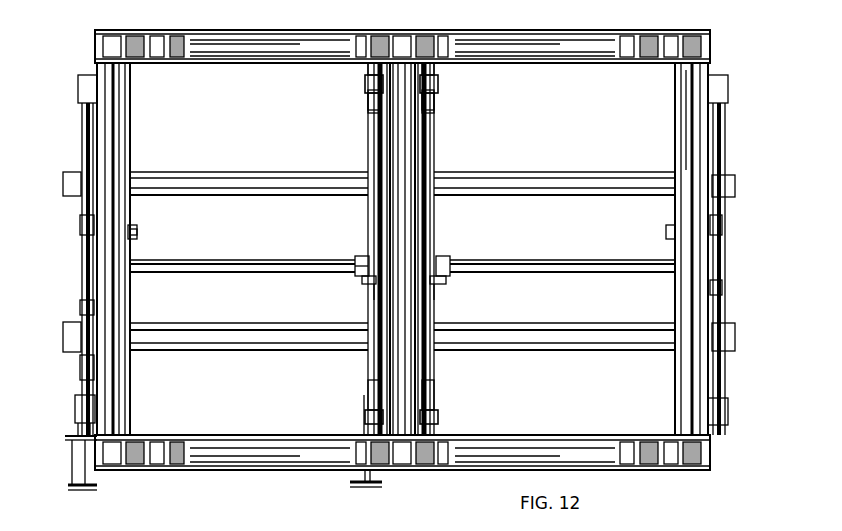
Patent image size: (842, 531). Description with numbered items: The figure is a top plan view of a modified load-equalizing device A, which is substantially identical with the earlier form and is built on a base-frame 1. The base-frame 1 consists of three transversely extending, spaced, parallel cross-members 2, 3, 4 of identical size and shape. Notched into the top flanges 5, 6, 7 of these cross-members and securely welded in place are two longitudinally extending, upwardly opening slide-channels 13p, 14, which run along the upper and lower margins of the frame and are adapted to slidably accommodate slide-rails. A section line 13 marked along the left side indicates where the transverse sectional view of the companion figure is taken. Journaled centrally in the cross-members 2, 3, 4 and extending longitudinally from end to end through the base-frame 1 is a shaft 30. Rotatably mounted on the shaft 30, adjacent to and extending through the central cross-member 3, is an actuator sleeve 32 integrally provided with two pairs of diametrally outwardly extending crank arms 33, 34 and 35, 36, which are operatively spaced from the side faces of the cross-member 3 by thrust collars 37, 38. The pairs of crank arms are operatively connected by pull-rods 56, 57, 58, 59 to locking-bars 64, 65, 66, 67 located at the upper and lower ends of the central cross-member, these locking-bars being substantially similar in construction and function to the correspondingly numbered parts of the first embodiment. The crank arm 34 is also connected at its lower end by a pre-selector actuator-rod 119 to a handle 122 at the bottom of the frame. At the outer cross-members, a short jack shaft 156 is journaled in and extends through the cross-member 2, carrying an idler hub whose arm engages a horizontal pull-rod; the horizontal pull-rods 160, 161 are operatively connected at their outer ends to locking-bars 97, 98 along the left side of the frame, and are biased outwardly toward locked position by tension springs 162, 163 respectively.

The base-frame 1 is at (715, 52).
The cross-member 2 is at (131, 249).
The cross-member 3 is at (430, 142).
The cross-member 4 is at (675, 97).
The top flange 5 is at (159, 116).
The top flange 6 is at (395, 153).
The top flange 7 is at (690, 116).
The section line 13— 13 is at (70, 62).
The slide-channel 13p is at (560, 68).
The slide-channel 14 is at (522, 445).
The shaft 30 is at (242, 264).
The actuator sleeve 32 is at (358, 258).
The crank arm 33 is at (362, 270).
The crank arm 34 is at (370, 284).
The crank arm 35 is at (434, 252).
The crank arm 36 is at (436, 290).
The thrust collar 37 is at (375, 292).
The thrust collar 38 is at (446, 278).
The pull-rod 56 is at (372, 130).
The pull-rod 57 is at (375, 378).
The pull-rod 58 is at (432, 162).
The pull-rod 59 is at (430, 373).
The locking-bar 64 is at (375, 42).
The locking-bar 65 is at (378, 462).
The locking-bar 66 is at (428, 42).
The locking-bar 67 is at (428, 462).
The locking-bar 97 is at (80, 402).
The locking-bar 98 is at (84, 110).
The pre-selector actuator-rod 119 is at (363, 402).
The handle 122 is at (350, 486).
The jack shaft 156 is at (137, 232).
The pull-rod 160 is at (80, 368).
The pull-rod 161 is at (82, 226).
The tension spring 162 is at (82, 312).
The tension spring 163 is at (84, 143).
The load-equalizing device A is at (530, 28).